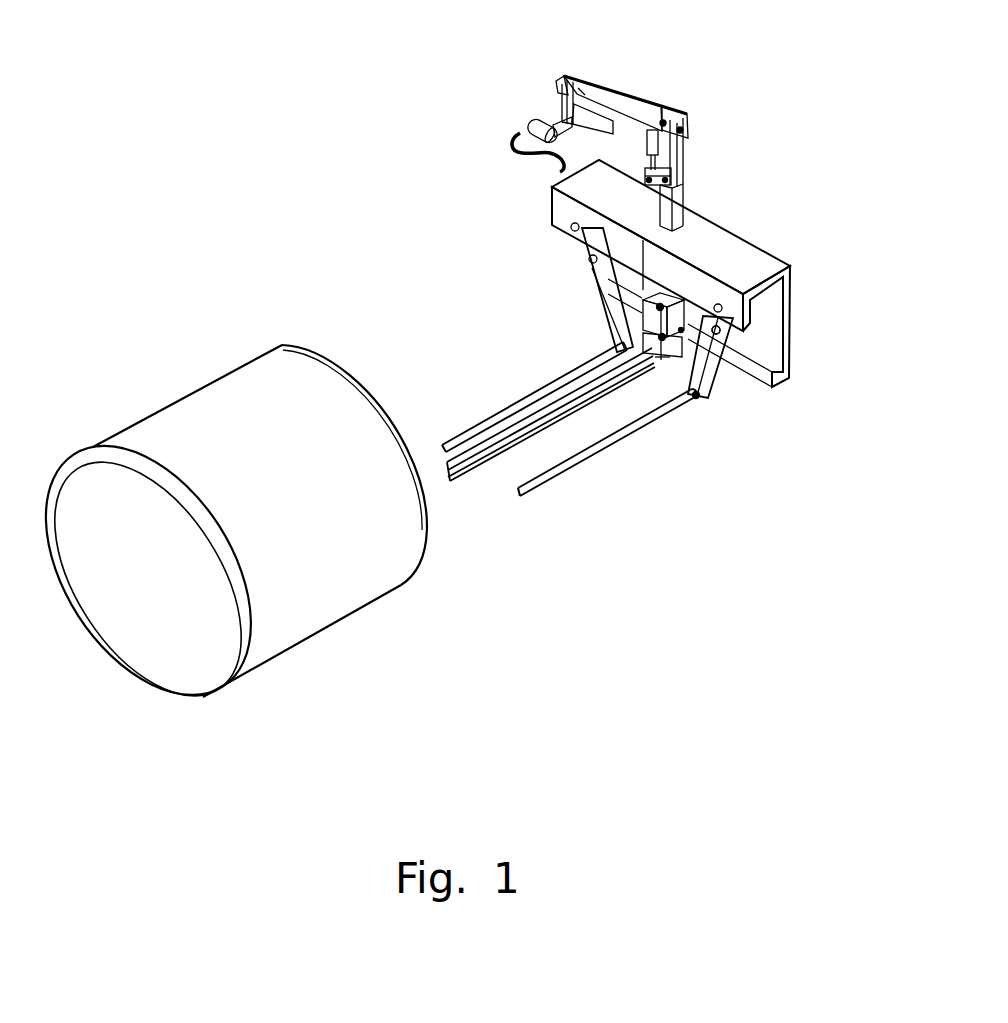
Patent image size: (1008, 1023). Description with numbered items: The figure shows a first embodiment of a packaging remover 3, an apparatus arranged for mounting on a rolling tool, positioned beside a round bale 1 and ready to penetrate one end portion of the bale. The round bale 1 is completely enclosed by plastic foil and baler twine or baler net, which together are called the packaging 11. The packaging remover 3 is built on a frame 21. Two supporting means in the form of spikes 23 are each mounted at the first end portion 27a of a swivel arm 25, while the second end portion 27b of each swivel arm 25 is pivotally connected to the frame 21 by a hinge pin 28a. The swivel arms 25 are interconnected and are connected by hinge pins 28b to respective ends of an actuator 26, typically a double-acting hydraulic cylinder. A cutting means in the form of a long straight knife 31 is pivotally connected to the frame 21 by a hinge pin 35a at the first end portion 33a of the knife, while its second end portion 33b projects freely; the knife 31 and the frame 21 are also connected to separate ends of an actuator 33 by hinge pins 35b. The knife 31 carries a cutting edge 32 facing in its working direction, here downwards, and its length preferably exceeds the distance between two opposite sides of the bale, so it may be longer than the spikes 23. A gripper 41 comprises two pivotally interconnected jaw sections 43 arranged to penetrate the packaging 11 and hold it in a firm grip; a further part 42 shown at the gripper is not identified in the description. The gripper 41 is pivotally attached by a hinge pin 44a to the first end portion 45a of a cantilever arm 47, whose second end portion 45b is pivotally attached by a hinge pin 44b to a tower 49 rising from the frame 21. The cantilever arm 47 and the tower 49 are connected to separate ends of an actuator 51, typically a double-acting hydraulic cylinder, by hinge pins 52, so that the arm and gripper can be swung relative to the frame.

The round bale 1 is at (150, 357).
The packaging 11 is at (247, 652).
The packaging remover 3 is at (412, 185).
The frame 21 is at (767, 250).
The spikes 23 is at (573, 464).
The swivel arm 25 is at (710, 385).
The actuator 26 is at (598, 283).
The first end portion 27a is at (700, 400).
The second end portion 27b is at (735, 338).
The hinge pin 28a is at (738, 318).
The hinge pins 28b is at (583, 258).
The knife 31 is at (445, 463).
The cutting edge 32 is at (492, 465).
The actuator 33 is at (652, 305).
The first end portion 33a is at (661, 365).
The second end portion 33b is at (458, 472).
The hinge pin 35a is at (666, 362).
The hinge pins 35b is at (656, 312).
The gripper 41 is at (548, 124).
The hook pin cylinder 42 is at (530, 125).
The jaw sections 43 is at (557, 160).
The hinge pin 44a is at (592, 92).
The hinge pin 44b is at (688, 123).
The first end portion 45a is at (563, 75).
The second end portion 45b is at (692, 113).
The cantilever arm 47 is at (645, 100).
The tower 49 is at (687, 160).
The actuator 51 is at (647, 148).
The hinge pins 52 is at (670, 186).